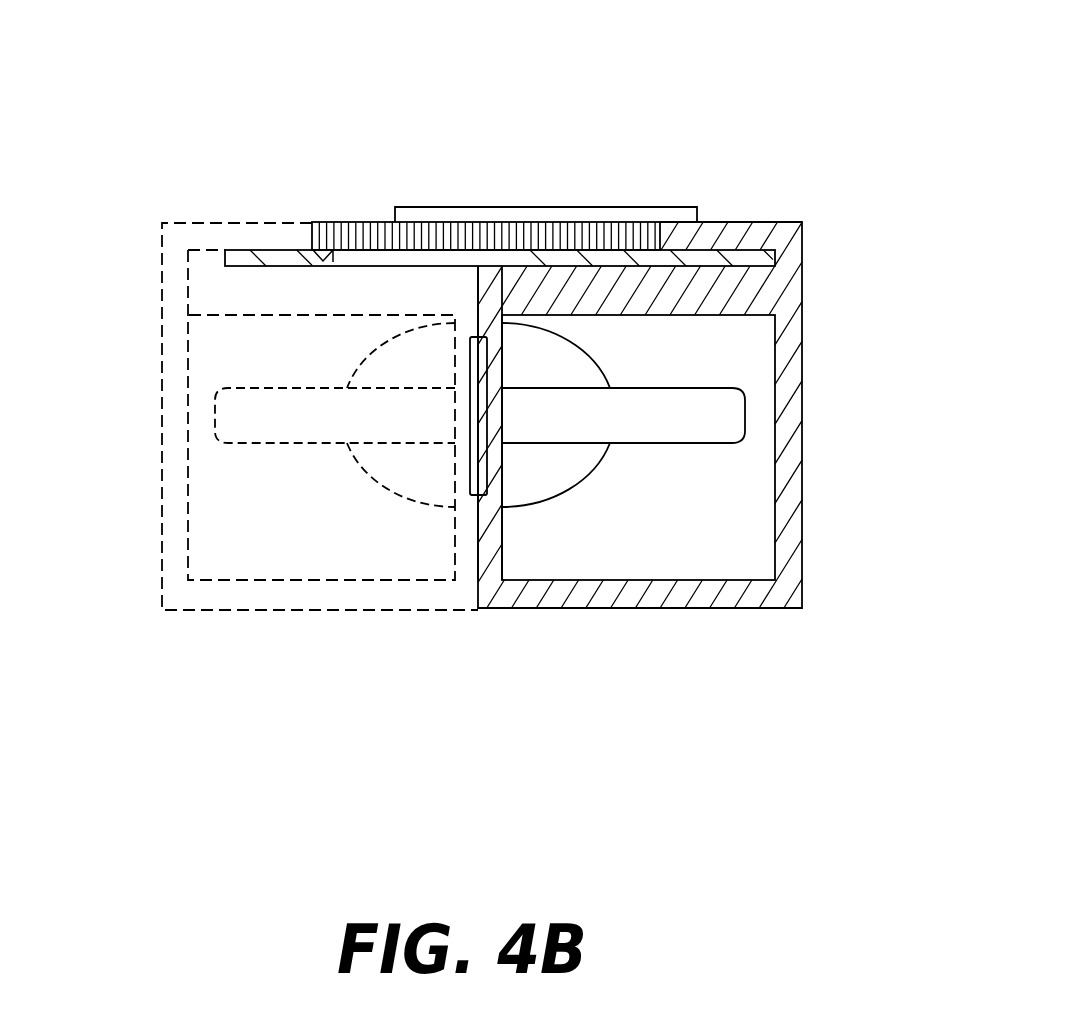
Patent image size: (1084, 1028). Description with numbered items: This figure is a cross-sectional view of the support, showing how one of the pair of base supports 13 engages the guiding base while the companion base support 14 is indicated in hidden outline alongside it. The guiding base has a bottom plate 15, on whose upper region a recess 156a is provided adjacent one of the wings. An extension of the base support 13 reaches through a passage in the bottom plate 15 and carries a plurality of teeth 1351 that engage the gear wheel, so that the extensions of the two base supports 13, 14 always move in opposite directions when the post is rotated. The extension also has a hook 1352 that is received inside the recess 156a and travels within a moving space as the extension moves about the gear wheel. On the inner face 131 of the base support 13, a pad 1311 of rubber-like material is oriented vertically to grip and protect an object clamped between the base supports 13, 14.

The base support 13 is at (788, 476).
The inner face 131 is at (495, 528).
The pad 1311 is at (480, 407).
The base support 14 is at (178, 512).
The bottom plate 15 is at (222, 250).
The teeth 1351 is at (333, 246).
The hook 1352 is at (318, 248).
The recess 156a is at (362, 262).